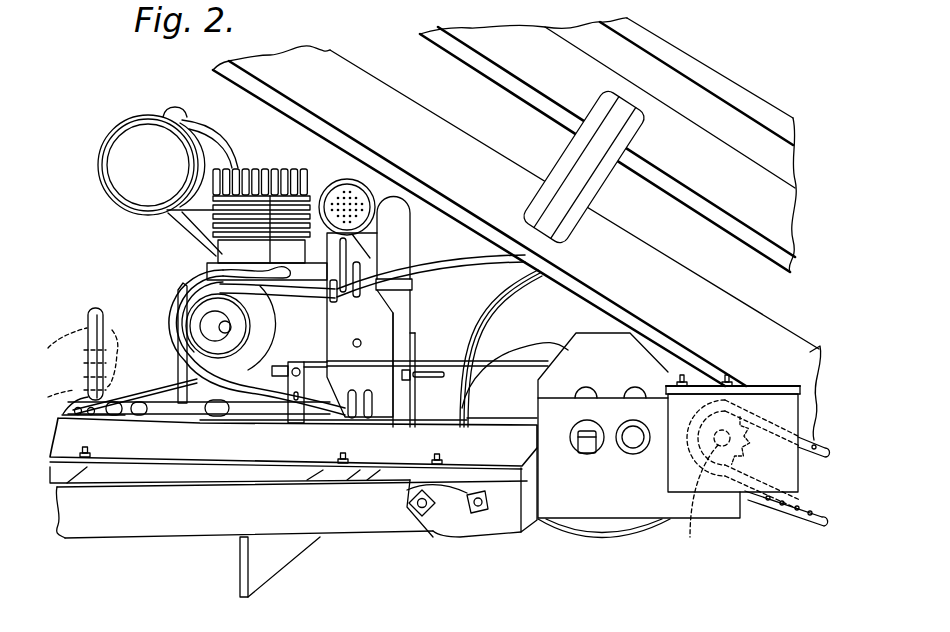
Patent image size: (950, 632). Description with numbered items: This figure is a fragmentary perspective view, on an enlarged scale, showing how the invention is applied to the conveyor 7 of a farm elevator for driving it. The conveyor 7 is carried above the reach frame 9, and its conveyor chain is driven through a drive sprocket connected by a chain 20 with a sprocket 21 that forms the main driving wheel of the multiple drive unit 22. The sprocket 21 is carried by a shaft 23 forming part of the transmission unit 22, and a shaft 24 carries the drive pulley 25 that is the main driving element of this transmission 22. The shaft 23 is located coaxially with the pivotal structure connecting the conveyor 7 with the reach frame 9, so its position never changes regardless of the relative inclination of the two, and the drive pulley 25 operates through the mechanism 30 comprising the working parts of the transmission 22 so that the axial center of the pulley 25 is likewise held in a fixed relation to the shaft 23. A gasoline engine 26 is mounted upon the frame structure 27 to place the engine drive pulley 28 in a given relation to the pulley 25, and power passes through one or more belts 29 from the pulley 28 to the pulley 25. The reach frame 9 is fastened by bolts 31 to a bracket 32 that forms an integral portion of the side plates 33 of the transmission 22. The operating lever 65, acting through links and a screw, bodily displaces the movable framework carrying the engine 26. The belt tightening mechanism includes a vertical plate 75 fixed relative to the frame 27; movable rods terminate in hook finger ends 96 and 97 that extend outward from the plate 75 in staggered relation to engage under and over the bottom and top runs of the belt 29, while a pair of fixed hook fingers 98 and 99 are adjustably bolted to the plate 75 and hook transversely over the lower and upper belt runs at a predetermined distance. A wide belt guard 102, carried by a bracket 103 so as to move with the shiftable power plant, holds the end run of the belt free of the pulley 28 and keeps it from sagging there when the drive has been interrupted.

The conveyor 7 is at (722, 89).
The reach frame 9 is at (200, 525).
The chain 20 is at (787, 514).
The sprocket 21 is at (741, 422).
The multiple drive unit 22 is at (613, 510).
The shaft 23 is at (699, 505).
The shaft 24 is at (588, 453).
The drive pulley 25 is at (500, 297).
The gasoline engine 26 is at (320, 166).
The frame structure 27 is at (154, 376).
The engine drive pulley 28 is at (215, 300).
The belt 29 is at (466, 256).
The mechanism 30 is at (634, 374).
The bolts 31 is at (407, 492).
The bracket 32 is at (500, 515).
The side plates 33 is at (585, 500).
The operating lever 65 is at (88, 310).
The vertical plate 75 is at (389, 325).
The hook finger end 96 is at (369, 412).
The hook finger end 97 is at (336, 302).
The fixed hook finger 98 is at (332, 414).
The fixed hook finger 99 is at (405, 290).
The belt guard 102 is at (217, 397).
The bracket 103 is at (178, 288).